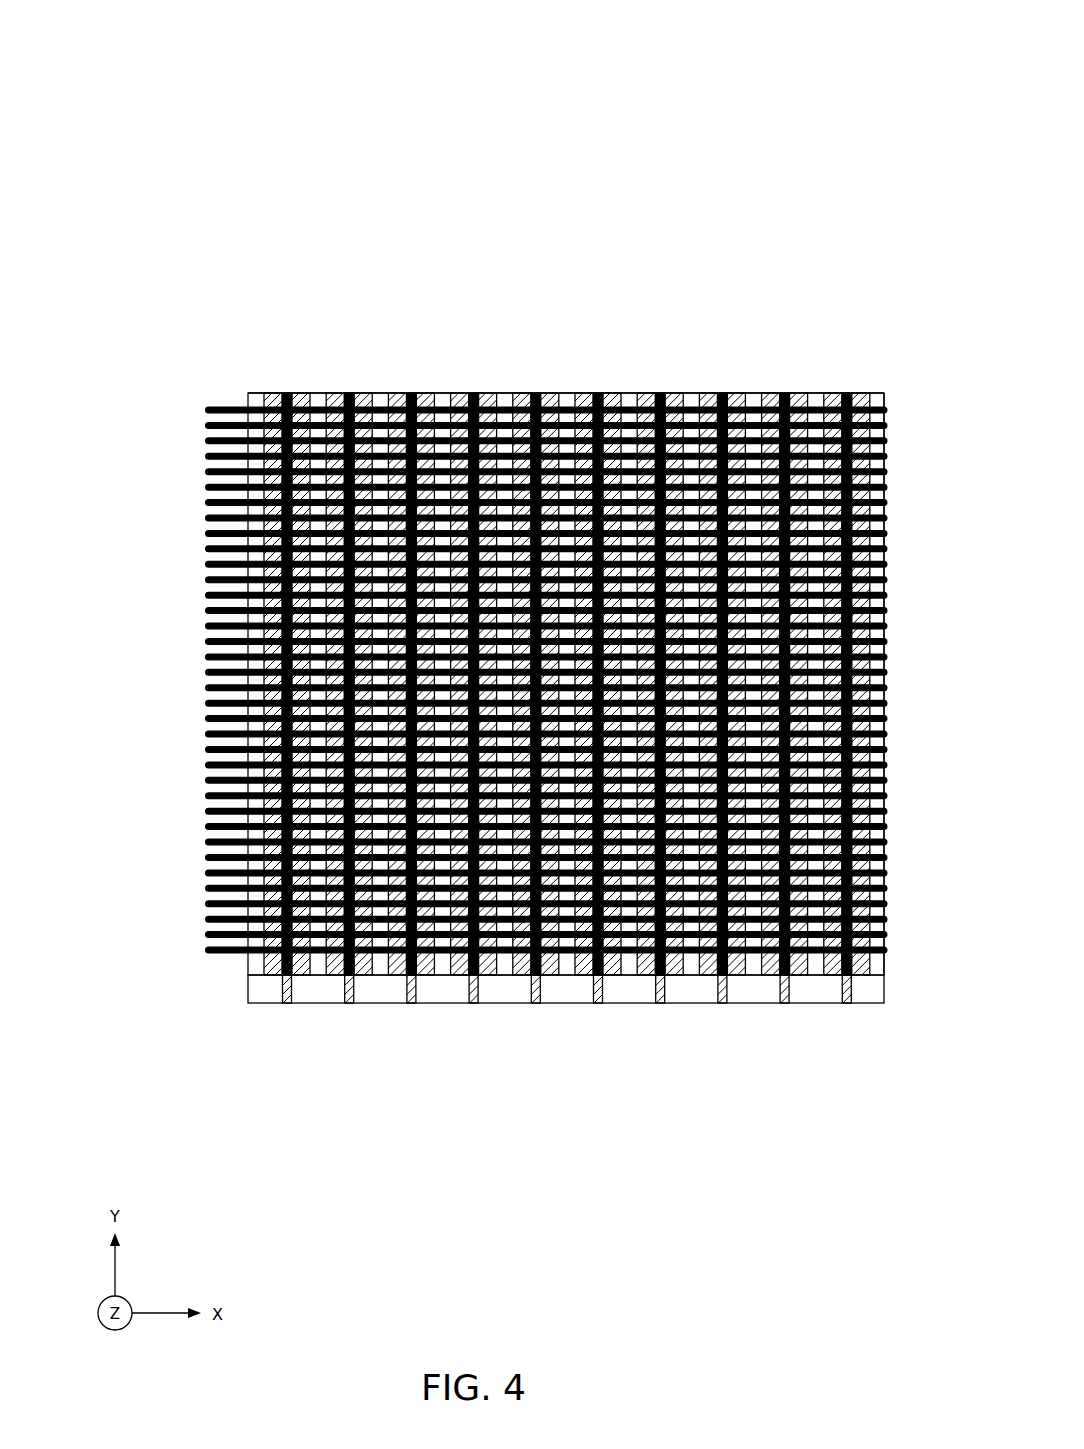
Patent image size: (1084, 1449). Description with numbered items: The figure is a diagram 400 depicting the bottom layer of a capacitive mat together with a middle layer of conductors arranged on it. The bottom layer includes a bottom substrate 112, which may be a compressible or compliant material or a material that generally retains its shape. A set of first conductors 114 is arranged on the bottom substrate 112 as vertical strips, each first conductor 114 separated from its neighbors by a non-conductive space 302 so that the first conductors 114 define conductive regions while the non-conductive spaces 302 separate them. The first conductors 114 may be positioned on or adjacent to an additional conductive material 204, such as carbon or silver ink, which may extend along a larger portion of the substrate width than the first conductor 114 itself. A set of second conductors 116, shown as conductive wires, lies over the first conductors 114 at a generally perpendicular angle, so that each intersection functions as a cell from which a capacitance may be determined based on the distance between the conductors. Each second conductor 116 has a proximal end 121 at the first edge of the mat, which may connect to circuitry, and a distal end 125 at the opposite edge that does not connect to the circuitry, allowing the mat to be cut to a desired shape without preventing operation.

The diagram 400 is at (862, 70).
The second conductors 116 is at (188, 948).
The first conductor 114 is at (600, 1005).
The conductive material 204 is at (582, 968).
The non-conductive space 302 is at (566, 385).
The distal end 125 is at (875, 375).
The proximal end 121 is at (225, 975).
The bottom substrate 112 is at (747, 987).